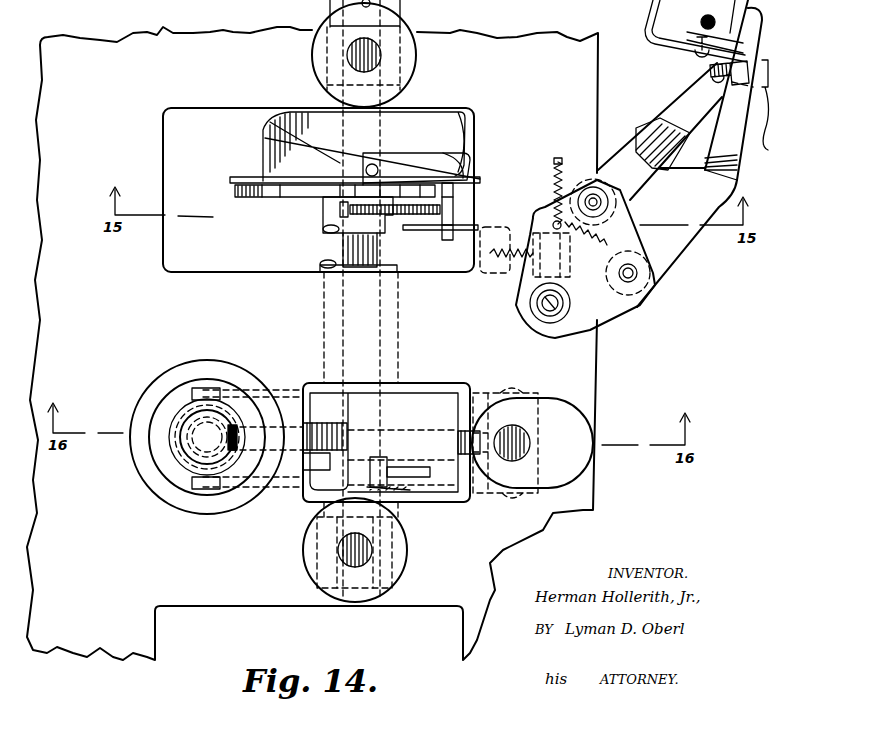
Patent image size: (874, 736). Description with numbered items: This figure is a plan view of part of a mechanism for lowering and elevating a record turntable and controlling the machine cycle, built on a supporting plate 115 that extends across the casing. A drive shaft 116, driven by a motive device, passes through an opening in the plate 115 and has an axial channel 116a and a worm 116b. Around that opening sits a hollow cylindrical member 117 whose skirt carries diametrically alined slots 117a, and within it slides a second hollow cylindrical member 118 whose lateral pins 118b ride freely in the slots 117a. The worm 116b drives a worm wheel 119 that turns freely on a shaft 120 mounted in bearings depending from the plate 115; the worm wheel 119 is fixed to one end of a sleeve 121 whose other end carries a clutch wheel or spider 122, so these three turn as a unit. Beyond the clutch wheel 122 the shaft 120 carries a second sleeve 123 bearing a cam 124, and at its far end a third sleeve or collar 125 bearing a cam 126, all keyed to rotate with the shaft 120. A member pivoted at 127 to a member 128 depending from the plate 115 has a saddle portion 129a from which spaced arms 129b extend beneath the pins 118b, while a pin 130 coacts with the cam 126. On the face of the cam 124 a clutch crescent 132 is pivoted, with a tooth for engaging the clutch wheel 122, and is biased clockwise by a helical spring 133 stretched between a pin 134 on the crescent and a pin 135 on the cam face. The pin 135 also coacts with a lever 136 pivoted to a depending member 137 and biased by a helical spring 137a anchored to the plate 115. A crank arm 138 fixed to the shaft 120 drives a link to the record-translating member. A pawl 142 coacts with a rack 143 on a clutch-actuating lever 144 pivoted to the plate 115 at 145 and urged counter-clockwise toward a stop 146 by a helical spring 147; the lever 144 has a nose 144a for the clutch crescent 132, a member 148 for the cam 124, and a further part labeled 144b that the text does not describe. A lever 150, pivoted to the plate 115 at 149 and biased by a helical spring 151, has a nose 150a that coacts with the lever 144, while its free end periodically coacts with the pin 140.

The supporting plate 115 is at (183, 593).
The drive shaft 116 is at (180, 487).
The axial channel 116a is at (180, 413).
The worm 116b is at (200, 447).
The hollow cylindrical member 117 is at (197, 427).
The diametrically alined slots 117a is at (200, 388).
The second hollow cylindrical member 118 is at (238, 490).
The pins or projections 118b is at (213, 390).
The worm wheel 119 is at (305, 390).
The shaft 120 is at (328, 13).
The sleeve 121 is at (322, 290).
The clutch wheel or spider 122 is at (463, 197).
The second sleeve 123 is at (405, 113).
The cam 124 is at (262, 152).
The third sleeve or collar 125 is at (400, 523).
The cam 126 is at (297, 493).
The pivot 127 is at (515, 503).
The member 128 is at (540, 432).
The saddle portion 129a is at (442, 395).
The spaced arms 129b is at (283, 383).
The pin 130 is at (390, 500).
The clutch crescent 132 is at (260, 197).
The helical spring 133 is at (393, 232).
The pin 134 is at (340, 207).
The pin 135 is at (453, 207).
The lever 136 is at (460, 250).
The member 137 is at (630, 305).
The helical spring 137a is at (497, 270).
The crank arm 138 is at (414, 53).
The pin 140 is at (696, 31).
The pawl 142 is at (737, 90).
The rack 143 is at (710, 66).
The clutch-actuating lever 144 is at (663, 123).
The nose 144a is at (362, 183).
The link bracket 144b is at (645, 15).
The pivot 145 is at (593, 200).
The stop 146 is at (553, 200).
The helical spring 147 is at (566, 200).
The member 148 is at (400, 158).
The pivot 149 is at (633, 278).
The lever 150 is at (700, 250).
The nose 150a is at (636, 150).
The helical spring 151 is at (637, 224).